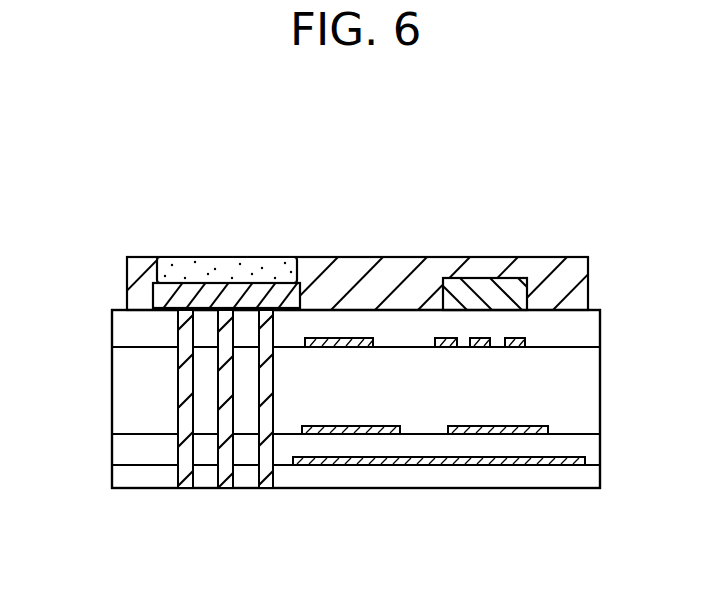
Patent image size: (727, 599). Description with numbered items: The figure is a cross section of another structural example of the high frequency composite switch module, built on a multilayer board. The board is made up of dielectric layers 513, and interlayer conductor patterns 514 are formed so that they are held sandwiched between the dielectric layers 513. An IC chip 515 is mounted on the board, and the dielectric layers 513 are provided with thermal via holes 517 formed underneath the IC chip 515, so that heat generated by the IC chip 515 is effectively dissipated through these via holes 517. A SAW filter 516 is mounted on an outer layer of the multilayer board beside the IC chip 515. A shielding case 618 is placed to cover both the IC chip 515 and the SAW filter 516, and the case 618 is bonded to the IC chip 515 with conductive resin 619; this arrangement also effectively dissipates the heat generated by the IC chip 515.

The dielectric layers 513 is at (97, 310).
The interlayer conductor patterns 514 is at (525, 347).
The IC chip 515 is at (302, 296).
The SAW filter 516 is at (485, 292).
The thermal via holes 517 is at (190, 488).
The shielding case 618 is at (133, 273).
The conductive resin 619 is at (222, 265).